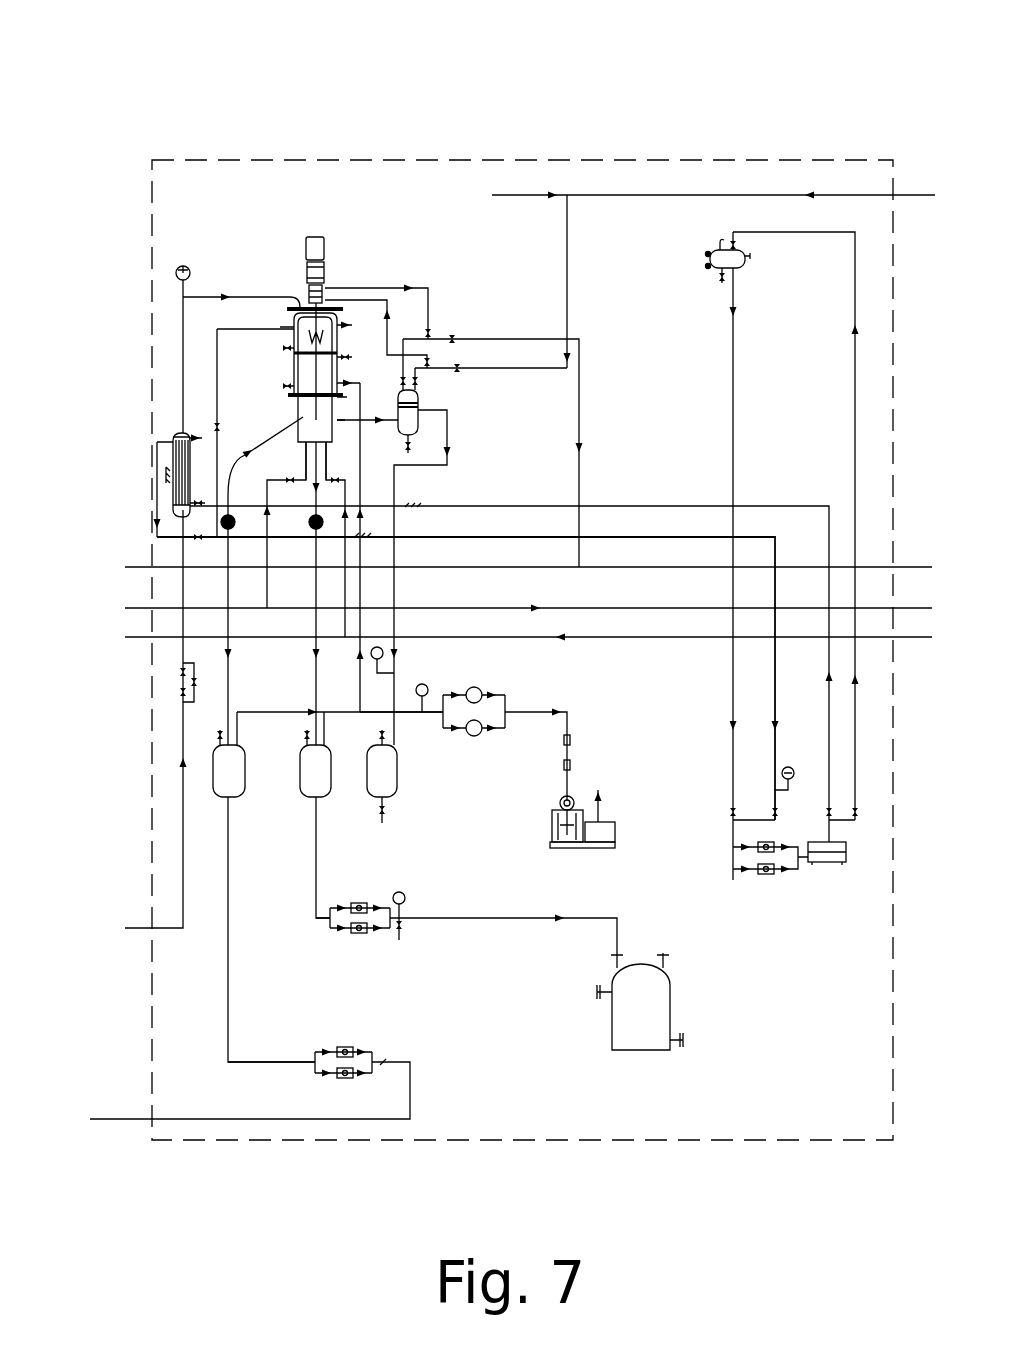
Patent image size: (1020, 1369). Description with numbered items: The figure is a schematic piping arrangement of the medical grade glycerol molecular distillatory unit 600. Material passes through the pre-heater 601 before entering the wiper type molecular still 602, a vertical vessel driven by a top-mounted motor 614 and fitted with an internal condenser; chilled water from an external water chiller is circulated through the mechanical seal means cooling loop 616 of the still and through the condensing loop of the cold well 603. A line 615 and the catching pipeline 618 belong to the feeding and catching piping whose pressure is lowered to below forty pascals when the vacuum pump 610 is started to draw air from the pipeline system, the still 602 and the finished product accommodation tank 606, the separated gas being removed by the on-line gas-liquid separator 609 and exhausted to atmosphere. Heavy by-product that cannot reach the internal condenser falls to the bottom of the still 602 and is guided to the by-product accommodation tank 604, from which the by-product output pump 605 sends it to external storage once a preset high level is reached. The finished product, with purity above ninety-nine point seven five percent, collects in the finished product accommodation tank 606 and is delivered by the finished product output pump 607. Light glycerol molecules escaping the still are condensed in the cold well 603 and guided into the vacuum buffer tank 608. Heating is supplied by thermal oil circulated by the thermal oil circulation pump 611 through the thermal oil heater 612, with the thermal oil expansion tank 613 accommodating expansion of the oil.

The medical grade glycerol molecular distillatory unit 600 is at (400, 158).
The pre-heater 601 is at (172, 434).
The wiper type molecular still 602 is at (296, 372).
The cold well 603 is at (418, 420).
The by-product accommodation tank 604 is at (233, 785).
The by-product output pump 605 is at (348, 1047).
The finished product accommodation tank 606 is at (315, 780).
The finished product output pump 607 is at (362, 937).
The vacuum buffer tank 608 is at (387, 780).
The on-line gas-liquid separator 609 is at (490, 705).
The vacuum pump 610 is at (602, 832).
The thermal oil circulation pump 611 is at (772, 873).
The thermal oil heater 612 is at (827, 855).
The thermal oil expansion tank 613 is at (708, 257).
The motor 614 is at (305, 309).
The pressure relief line 615 is at (210, 297).
The mechanical seal means cooling loop 616 is at (287, 428).
The catching pipeline 618 is at (318, 378).